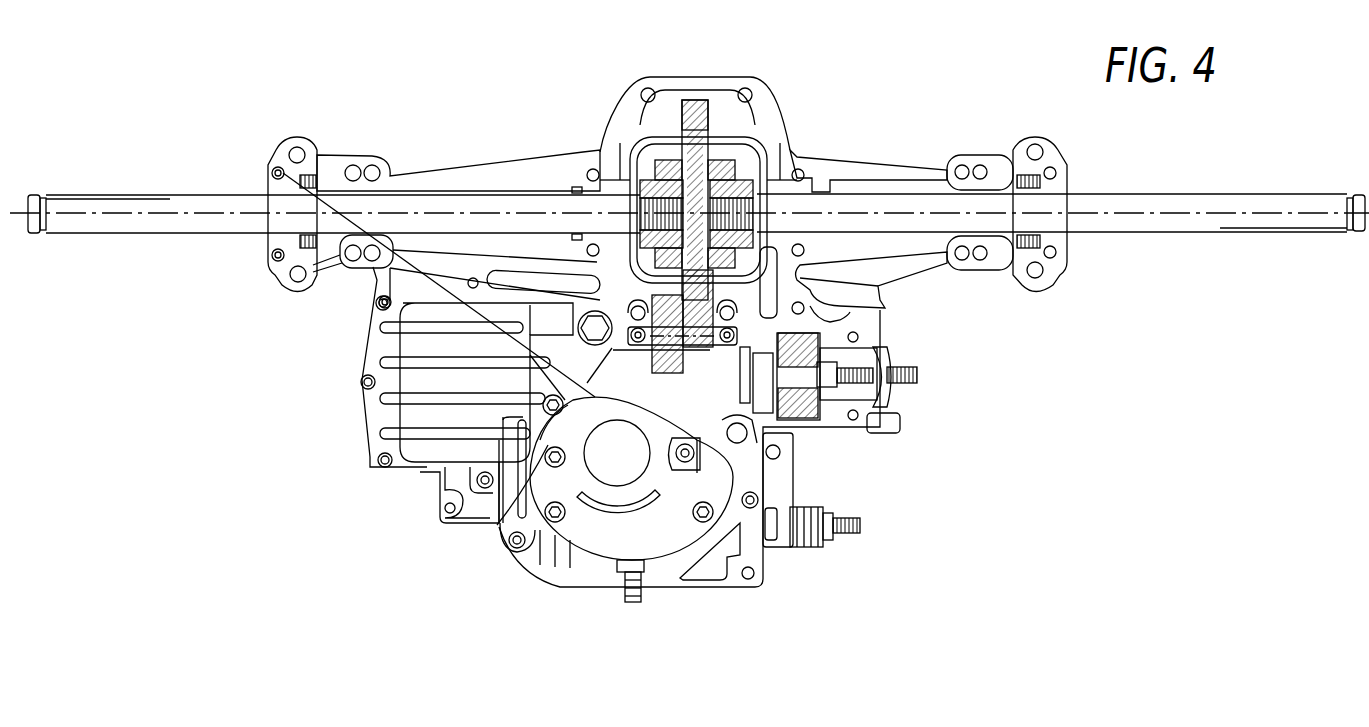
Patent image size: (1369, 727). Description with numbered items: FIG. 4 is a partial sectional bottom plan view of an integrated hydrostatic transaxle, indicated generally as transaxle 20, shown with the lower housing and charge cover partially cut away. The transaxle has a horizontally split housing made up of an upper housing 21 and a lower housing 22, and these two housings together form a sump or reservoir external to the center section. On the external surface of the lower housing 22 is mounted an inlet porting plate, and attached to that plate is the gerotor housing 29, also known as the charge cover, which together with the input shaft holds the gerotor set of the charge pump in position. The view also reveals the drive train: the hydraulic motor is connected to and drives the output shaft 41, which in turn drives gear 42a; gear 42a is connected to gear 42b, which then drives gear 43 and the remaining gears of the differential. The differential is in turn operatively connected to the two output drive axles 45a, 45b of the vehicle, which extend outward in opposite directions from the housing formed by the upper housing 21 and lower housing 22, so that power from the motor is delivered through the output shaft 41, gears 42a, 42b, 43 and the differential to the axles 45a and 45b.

The axle driving apparatus 20 is at (387, 90).
The upper housing 21 is at (857, 158).
The lower housing 22 is at (373, 408).
The gerotor housing 29 is at (567, 470).
The output shaft 41 is at (739, 384).
The gear 42a is at (613, 267).
The gear 42b is at (770, 296).
The gear 43 is at (700, 110).
The output drive axle 45a is at (442, 190).
The output drive axle 45b is at (1112, 192).